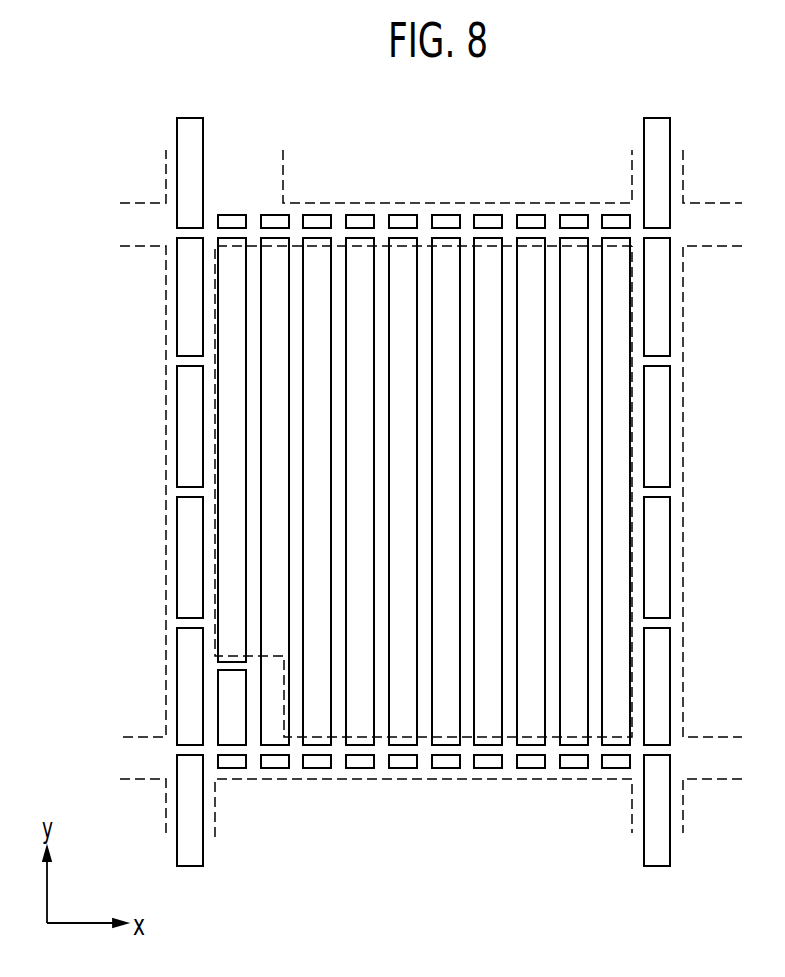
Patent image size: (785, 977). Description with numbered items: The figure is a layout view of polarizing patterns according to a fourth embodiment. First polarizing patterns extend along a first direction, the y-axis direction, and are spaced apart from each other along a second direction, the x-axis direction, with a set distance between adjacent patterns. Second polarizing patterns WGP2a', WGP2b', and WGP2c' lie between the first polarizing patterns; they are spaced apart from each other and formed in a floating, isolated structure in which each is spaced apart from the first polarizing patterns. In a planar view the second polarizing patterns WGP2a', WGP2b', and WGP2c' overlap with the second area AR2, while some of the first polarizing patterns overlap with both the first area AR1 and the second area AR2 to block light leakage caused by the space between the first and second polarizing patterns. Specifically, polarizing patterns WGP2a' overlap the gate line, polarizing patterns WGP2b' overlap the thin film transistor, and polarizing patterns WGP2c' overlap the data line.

The first area AR1 is at (470, 282).
The second area AR2 is at (551, 218).
The second polarizing patterns WGP2a' is at (424, 817).
The second polarizing patterns WGP2b' is at (255, 775).
The second polarizing patterns WGP2c' is at (131, 686).